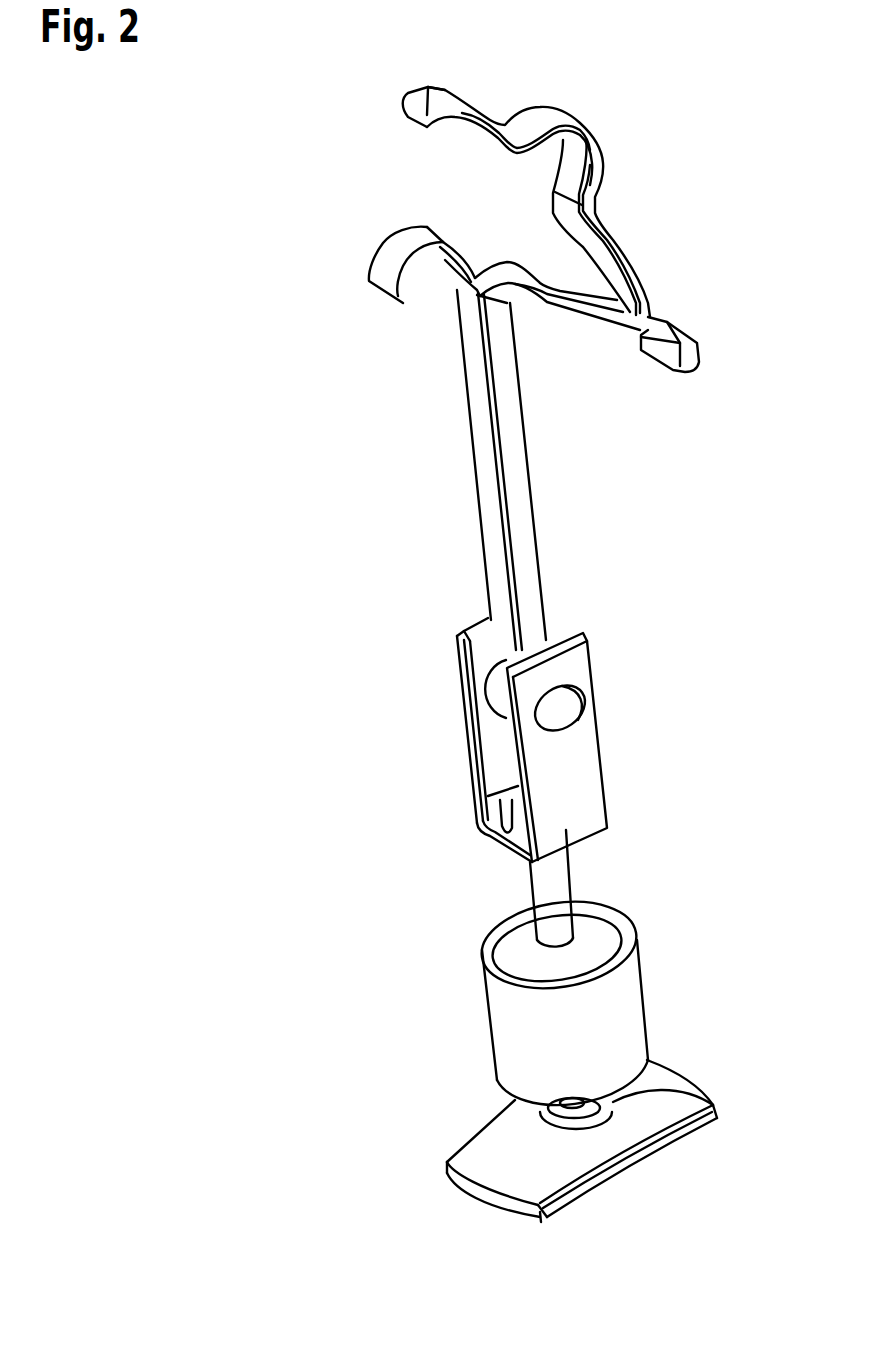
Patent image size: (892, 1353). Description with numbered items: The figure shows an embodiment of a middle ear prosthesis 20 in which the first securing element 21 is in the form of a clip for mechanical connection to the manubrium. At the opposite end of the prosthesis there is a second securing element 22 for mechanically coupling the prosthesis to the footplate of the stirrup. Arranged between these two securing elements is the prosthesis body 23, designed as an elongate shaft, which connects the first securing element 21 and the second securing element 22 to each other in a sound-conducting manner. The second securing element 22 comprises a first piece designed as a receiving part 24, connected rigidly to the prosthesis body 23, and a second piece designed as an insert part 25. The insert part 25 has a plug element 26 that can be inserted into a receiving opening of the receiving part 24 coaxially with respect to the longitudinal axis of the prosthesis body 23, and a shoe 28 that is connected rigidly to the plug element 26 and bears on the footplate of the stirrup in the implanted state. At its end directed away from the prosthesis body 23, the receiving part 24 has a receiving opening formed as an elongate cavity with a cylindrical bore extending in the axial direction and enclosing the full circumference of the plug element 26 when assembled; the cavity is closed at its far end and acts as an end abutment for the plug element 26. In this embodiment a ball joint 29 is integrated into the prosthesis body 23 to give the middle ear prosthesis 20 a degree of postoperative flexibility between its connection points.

The middle ear prosthesis 20 is at (198, 226).
The first securing element 21 is at (616, 248).
The second securing element 22 is at (507, 1038).
The prosthesis body 23 is at (543, 885).
The receiving part 24 is at (623, 992).
The insert part 25 is at (578, 1112).
The plug element 26 is at (700, 1090).
The shoe 28 is at (541, 1222).
The ball joint 29 is at (562, 698).